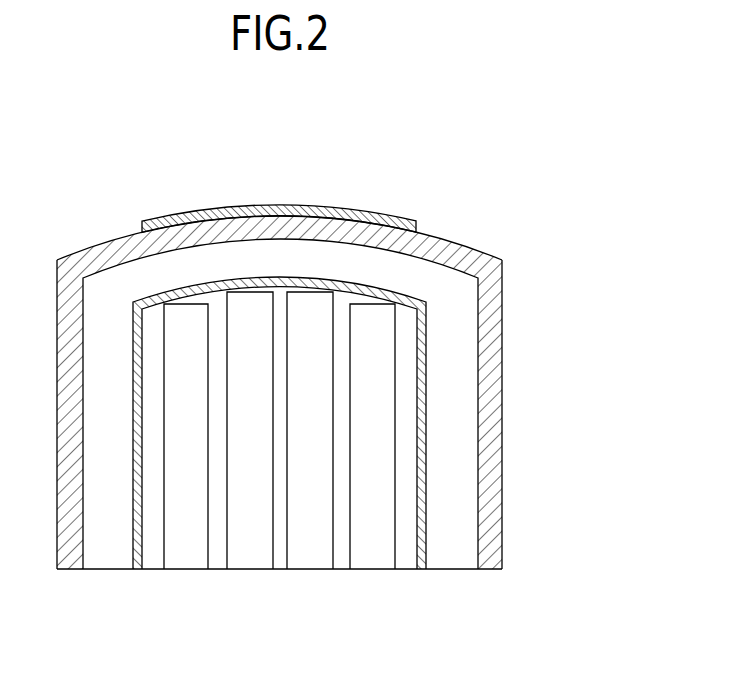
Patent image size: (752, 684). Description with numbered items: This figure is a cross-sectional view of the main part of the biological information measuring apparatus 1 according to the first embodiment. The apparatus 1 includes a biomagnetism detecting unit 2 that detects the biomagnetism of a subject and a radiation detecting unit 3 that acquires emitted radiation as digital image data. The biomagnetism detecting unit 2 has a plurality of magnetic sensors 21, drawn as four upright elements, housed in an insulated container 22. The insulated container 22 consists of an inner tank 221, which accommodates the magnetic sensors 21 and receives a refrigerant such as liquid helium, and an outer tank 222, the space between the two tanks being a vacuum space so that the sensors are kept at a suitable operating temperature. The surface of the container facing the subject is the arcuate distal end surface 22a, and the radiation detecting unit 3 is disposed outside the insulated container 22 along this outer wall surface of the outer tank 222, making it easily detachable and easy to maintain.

The biological information measuring apparatus 1 is at (530, 150).
The biomagnetism detecting unit 2 is at (645, 348).
The radiation detecting unit 3 is at (343, 212).
The magnetic sensor 21 is at (378, 382).
The insulated container 22 is at (583, 401).
The inner tank 221 is at (425, 420).
The outer tank 222 is at (498, 453).
The distal end surface 22a is at (468, 249).